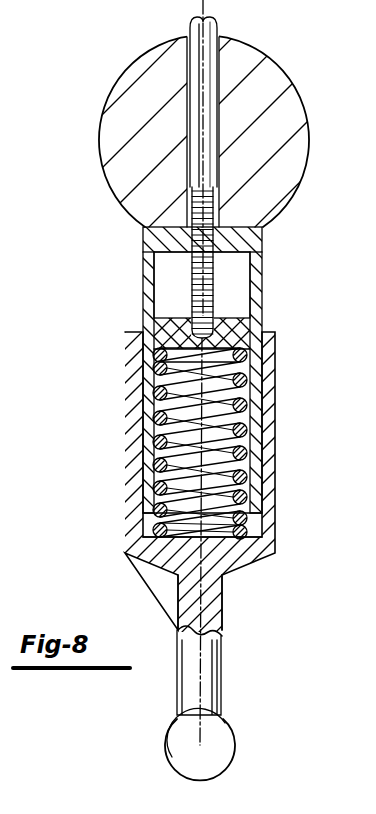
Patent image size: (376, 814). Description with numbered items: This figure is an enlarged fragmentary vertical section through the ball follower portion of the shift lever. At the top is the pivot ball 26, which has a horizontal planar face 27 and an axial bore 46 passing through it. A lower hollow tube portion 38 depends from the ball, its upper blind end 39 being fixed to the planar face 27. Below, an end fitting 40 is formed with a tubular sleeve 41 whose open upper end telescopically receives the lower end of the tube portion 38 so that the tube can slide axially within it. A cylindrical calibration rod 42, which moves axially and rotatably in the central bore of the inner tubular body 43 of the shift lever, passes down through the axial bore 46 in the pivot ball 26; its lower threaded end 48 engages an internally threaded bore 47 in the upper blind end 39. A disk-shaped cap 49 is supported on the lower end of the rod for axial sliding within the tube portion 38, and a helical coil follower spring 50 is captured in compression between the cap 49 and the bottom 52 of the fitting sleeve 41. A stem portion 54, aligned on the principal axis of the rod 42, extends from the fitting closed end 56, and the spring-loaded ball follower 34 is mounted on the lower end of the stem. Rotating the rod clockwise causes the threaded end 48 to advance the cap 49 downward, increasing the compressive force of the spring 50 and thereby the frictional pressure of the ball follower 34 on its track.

The pivot ball 26 is at (263, 83).
The horizontal planar face 27 is at (213, 225).
The ball follower 34 is at (213, 735).
The lower hollow tube portion 38 is at (252, 265).
The upper blind end 39 is at (264, 233).
The end fitting 40 is at (188, 482).
The tubular sleeve 41 is at (272, 455).
The calibration rod 42 is at (218, 33).
The inner tubular body 43 is at (200, 692).
The axial bore 46 is at (218, 152).
The internally threaded bore 47 is at (153, 254).
The lower threaded end 48 is at (207, 272).
The disk-shaped cap 49 is at (232, 332).
The helical coil follower spring 50 is at (203, 390).
The bottom 52 is at (253, 532).
The stem portion 54 is at (198, 670).
The fitting closed end 56 is at (224, 562).